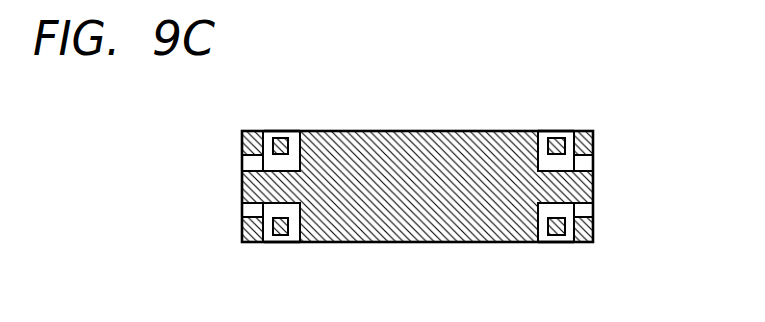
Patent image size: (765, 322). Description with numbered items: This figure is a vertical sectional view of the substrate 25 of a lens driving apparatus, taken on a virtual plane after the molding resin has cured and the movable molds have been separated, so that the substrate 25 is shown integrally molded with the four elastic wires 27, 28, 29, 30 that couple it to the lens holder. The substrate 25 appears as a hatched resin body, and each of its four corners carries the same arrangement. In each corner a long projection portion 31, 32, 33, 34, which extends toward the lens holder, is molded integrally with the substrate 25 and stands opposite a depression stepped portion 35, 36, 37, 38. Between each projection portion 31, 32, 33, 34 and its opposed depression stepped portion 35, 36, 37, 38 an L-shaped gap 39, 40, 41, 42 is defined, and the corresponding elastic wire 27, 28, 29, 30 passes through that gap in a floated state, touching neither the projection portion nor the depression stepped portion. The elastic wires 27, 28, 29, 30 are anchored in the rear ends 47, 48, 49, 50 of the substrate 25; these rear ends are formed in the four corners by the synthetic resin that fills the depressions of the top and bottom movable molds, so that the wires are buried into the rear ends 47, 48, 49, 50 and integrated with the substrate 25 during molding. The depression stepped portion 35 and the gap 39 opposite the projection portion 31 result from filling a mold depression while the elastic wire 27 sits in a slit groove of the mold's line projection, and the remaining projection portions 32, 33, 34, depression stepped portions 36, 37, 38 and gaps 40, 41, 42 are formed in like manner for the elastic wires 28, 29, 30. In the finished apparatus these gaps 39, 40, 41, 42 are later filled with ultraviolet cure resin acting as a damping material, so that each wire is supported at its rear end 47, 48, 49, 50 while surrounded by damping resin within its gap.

The substrate 25 is at (420, 131).
The elastic wire 27 is at (286, 133).
The elastic wire 28 is at (283, 242).
The elastic wire 29 is at (553, 132).
The elastic wire 30 is at (551, 242).
The projection portion 31 is at (240, 137).
The projection portion 32 is at (240, 229).
The projection portion 33 is at (595, 138).
The projection portion 34 is at (595, 232).
The depression stepped portion 35 is at (289, 166).
The depression stepped portion 36 is at (289, 214).
The depression stepped portion 37 is at (552, 158).
The depression stepped portion 38 is at (552, 212).
The L-shaped gap 39 is at (250, 162).
The L-shaped gap 40 is at (247, 207).
The L-shaped gap 41 is at (585, 163).
The L-shaped gap 42 is at (585, 208).
The rear end 47 is at (272, 133).
The rear end 48 is at (270, 242).
The rear end 49 is at (567, 132).
The rear end 50 is at (565, 242).